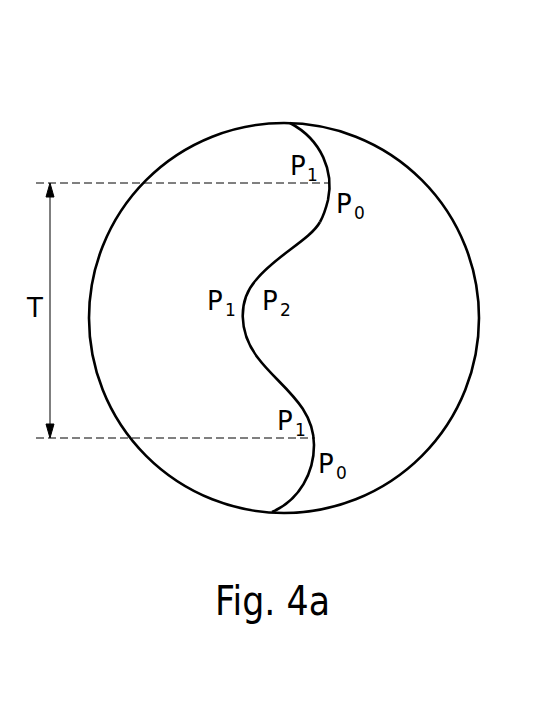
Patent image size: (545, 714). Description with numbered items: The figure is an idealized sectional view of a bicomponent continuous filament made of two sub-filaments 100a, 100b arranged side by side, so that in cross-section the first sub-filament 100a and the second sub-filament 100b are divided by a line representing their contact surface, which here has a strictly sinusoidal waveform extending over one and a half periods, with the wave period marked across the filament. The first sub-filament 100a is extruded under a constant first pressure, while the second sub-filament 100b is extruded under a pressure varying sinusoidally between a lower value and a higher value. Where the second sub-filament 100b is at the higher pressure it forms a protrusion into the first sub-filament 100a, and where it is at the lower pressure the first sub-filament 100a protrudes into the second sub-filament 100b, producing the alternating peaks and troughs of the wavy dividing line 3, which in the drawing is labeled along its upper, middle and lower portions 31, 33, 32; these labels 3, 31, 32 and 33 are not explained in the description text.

The first sub-filament 100a is at (208, 163).
The second sub-filament 100b is at (378, 167).
The dividing curve 3 is at (318, 222).
The upper curve section 31 is at (328, 183).
The lower curve section 32 is at (318, 441).
The middle curve section 33 is at (245, 312).